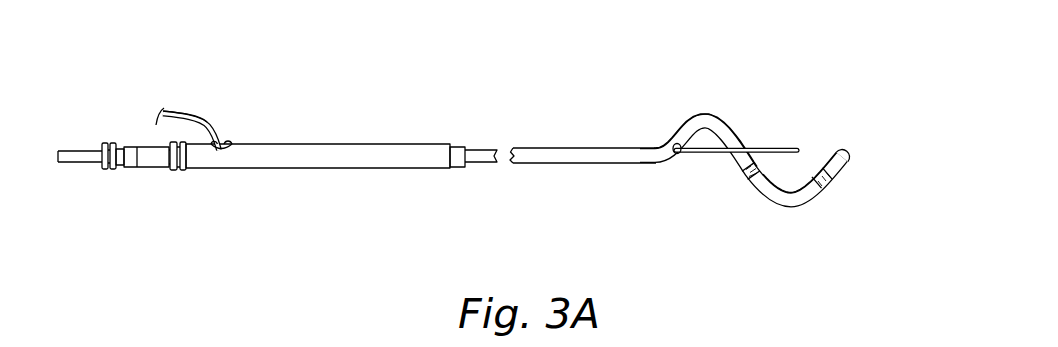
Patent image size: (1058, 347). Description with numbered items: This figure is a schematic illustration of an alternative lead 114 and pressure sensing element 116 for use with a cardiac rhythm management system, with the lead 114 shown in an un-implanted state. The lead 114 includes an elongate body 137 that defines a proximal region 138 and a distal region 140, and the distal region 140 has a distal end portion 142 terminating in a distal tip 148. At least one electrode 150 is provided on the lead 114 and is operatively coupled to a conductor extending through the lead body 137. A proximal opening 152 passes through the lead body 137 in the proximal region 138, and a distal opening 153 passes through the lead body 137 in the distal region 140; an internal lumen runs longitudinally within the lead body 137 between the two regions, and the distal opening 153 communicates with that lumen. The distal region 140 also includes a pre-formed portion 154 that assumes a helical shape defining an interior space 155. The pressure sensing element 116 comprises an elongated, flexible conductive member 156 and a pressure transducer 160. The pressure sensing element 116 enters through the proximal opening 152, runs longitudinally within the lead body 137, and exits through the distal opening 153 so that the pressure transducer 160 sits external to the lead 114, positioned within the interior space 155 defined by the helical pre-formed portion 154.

The lead 114 is at (277, 160).
The pressure sensing element 116 is at (213, 93).
The elongate body 137 is at (479, 172).
The proximal region 138 is at (420, 142).
The distal region 140 is at (708, 157).
The distal end portion 142 is at (582, 148).
The distal tip 148 is at (848, 152).
The electrode 150 is at (747, 181).
The proximal opening 152 is at (227, 142).
The distal opening 153 is at (675, 156).
The pre-formed portion 154 is at (684, 108).
The interior space 155 is at (793, 173).
The flexible conductive member 156 is at (186, 103).
The pressure transducer 160 is at (732, 154).